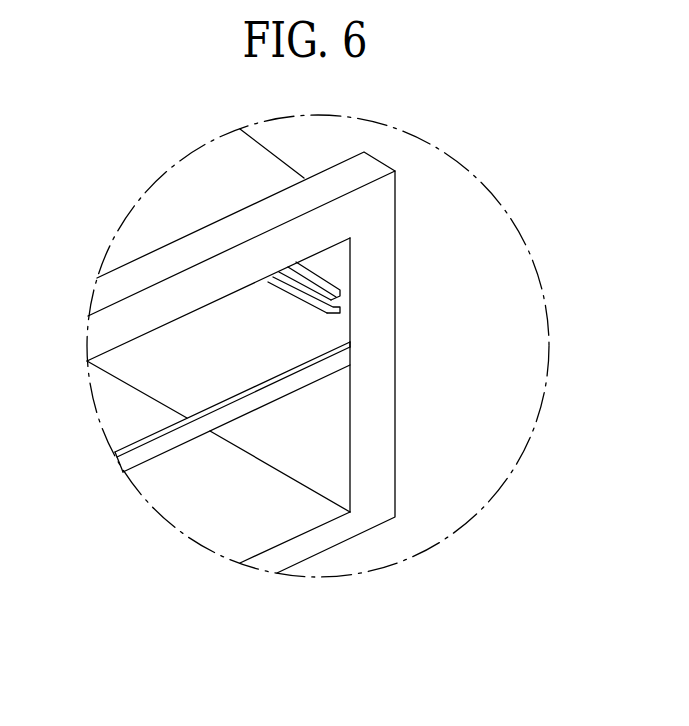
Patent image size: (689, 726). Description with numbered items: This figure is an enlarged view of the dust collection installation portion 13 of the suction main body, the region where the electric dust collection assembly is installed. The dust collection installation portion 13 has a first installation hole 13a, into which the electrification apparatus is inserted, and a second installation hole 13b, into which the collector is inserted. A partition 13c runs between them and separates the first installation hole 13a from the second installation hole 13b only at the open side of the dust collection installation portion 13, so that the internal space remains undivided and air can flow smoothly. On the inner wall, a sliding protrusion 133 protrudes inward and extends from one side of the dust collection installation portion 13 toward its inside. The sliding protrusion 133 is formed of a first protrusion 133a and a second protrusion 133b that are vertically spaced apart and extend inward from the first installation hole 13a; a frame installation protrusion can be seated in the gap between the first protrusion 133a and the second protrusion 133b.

The dust collection installation portion 13 is at (183, 290).
The first installation hole 13a is at (189, 365).
The second installation hole 13b is at (253, 493).
The partition 13c is at (287, 384).
The sliding protrusion 133 is at (465, 282).
The first protrusion 133a is at (333, 287).
The second protrusion 133b is at (338, 310).